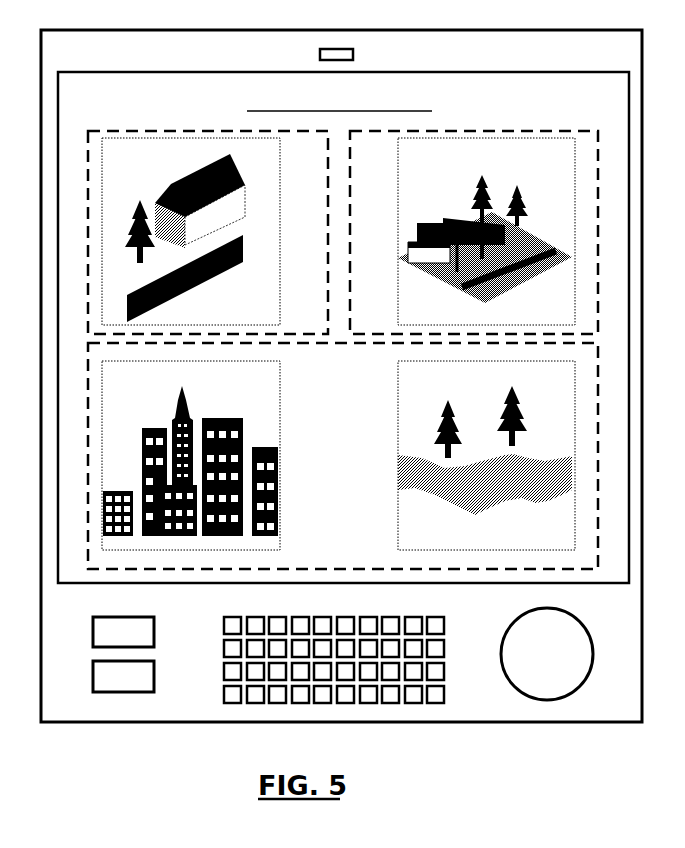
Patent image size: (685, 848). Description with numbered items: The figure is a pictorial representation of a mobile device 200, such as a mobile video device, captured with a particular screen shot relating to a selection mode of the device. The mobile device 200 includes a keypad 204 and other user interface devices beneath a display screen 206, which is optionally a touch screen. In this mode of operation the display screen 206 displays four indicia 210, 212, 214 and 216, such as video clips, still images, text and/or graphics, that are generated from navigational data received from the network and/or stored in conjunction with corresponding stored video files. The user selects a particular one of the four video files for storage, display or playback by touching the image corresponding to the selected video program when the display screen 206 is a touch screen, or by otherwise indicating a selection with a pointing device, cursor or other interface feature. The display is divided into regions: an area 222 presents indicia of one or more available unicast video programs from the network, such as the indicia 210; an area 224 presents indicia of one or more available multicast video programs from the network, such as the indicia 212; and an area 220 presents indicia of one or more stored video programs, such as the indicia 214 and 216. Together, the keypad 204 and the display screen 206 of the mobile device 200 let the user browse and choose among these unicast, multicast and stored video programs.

The mobile device 200 is at (199, 711).
The keypad 204 is at (318, 605).
The display screen 206 is at (577, 106).
The indicia 210 is at (148, 166).
The indicia 212 is at (441, 166).
The indicia 214 is at (145, 391).
The indicia 216 is at (439, 392).
The area 220 is at (352, 385).
The area 222 is at (150, 131).
The area 224 is at (450, 131).